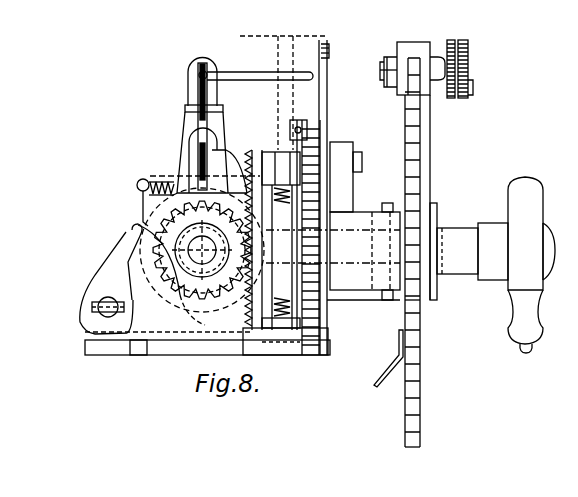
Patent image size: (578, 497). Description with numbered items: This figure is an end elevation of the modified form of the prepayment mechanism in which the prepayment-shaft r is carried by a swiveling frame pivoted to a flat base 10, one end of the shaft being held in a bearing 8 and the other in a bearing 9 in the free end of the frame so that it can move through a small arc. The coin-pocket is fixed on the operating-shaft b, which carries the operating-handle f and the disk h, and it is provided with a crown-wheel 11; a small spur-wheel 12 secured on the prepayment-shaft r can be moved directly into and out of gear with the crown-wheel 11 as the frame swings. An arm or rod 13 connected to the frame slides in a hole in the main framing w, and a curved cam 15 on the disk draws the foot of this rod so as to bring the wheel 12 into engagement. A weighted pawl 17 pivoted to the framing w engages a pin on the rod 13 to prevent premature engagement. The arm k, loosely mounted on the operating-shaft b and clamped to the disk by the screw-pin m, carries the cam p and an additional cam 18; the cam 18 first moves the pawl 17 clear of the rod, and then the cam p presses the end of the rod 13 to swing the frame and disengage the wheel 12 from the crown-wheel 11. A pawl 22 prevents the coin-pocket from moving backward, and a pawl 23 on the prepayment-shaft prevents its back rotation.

The bearing 8 is at (222, 144).
The bearing 9 is at (282, 50).
The main framing w is at (322, 50).
The pawl 22 is at (310, 120).
The crown-wheel 11 is at (250, 178).
The arm or rod 13 is at (353, 282).
The weighted pawl 17 is at (346, 195).
The additional cam 18 is at (393, 86).
The cam or projection p is at (382, 64).
The screw-pin m is at (470, 97).
The arm k is at (428, 163).
The disk h is at (418, 380).
The curved cam 15 is at (382, 388).
The prepayment-shaft r is at (202, 250).
The pawl 23 is at (105, 264).
The spur-wheel 12 is at (178, 295).
The flat base 10 is at (172, 348).
The operating-shaft b is at (472, 251).
The operating-handle f is at (531, 265).